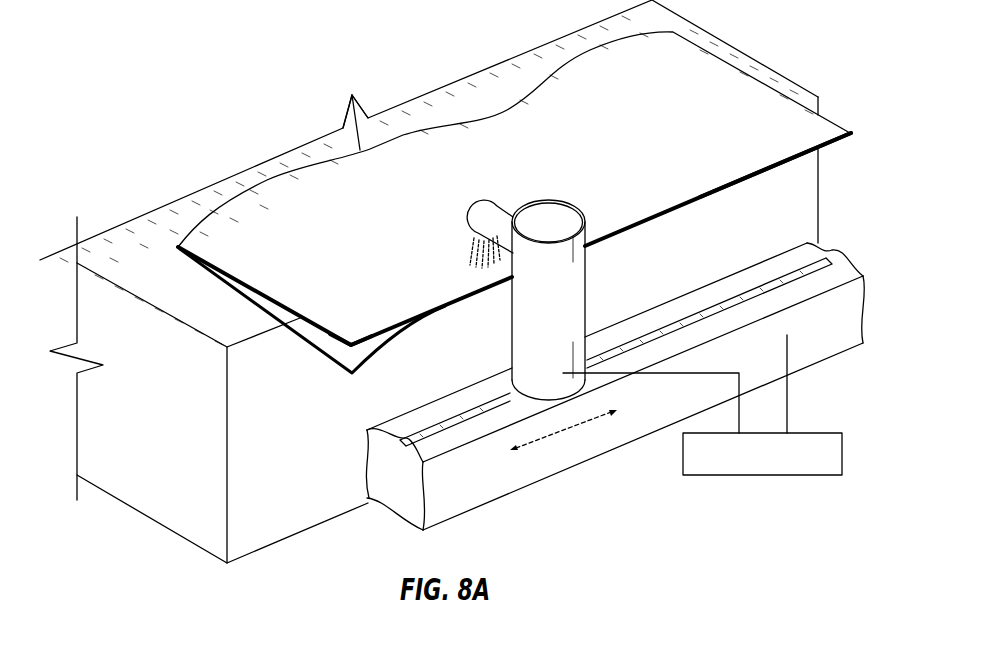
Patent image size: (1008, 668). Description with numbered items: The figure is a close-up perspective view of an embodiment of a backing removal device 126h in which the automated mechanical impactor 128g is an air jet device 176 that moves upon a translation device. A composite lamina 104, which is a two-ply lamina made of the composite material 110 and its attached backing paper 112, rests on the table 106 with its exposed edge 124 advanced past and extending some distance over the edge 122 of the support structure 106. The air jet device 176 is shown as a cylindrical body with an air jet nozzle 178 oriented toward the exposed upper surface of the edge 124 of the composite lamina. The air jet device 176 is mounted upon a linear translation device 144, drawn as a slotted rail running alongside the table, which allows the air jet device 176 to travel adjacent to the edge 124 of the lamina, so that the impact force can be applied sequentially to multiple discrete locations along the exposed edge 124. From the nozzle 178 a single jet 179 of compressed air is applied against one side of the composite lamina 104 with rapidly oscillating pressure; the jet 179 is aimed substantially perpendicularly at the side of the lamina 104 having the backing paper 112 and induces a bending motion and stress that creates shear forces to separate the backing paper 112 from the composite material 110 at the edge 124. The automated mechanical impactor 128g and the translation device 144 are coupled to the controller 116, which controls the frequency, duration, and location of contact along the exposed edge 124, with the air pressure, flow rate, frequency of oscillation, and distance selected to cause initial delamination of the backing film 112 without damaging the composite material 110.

The composite lamina 104 is at (450, 153).
The table 106 is at (120, 240).
The composite material 110 is at (345, 351).
The backing paper 112 is at (351, 328).
The controller 116 is at (762, 476).
The edge of the support structure 122 is at (248, 345).
The exposed edge 124 is at (797, 167).
The backing removal device 126h is at (240, 86).
The automated mechanical impactor 128g is at (569, 291).
The linear translation device 144 is at (632, 405).
The air jet device 176 is at (547, 220).
The air jet nozzle 178 is at (487, 213).
The jet of air 179 is at (472, 256).